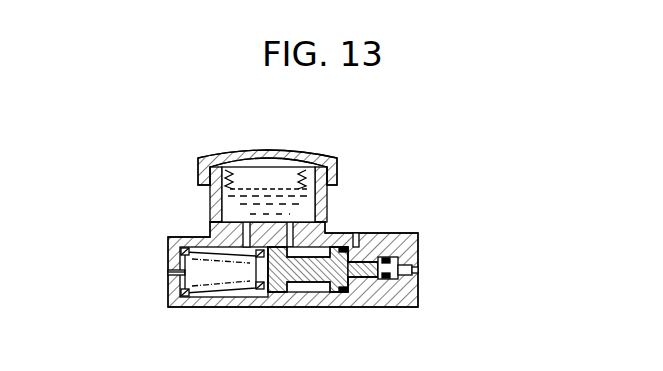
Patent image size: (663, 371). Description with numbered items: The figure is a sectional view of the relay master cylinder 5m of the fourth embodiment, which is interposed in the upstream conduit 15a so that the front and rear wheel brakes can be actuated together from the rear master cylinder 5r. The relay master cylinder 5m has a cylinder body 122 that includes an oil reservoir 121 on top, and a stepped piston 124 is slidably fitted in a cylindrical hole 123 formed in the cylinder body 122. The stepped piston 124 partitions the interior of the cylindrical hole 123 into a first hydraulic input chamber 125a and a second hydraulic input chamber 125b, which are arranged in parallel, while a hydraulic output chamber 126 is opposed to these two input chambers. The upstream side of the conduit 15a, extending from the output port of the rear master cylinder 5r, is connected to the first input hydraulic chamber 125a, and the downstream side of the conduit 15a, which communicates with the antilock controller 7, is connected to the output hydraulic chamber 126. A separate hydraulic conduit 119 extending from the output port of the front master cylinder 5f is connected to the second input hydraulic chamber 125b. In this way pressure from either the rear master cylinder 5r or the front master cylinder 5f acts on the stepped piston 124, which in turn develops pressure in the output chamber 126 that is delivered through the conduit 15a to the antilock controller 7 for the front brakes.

The relay master cylinder 5m is at (204, 151).
The oil reservoir 121 is at (214, 209).
The cylinder body 122 is at (177, 249).
The cylindrical hole 123 is at (241, 291).
The stepped piston 124 is at (313, 279).
The first hydraulic input chamber 125a is at (405, 274).
The second hydraulic input chamber 125b is at (357, 293).
The hydraulic output chamber 126 is at (187, 294).
The hydraulic conduit 119 is at (357, 205).
The front master cylinder 5f is at (356, 233).
The rear master cylinder 5r is at (418, 268).
The antilock controller 7 is at (168, 273).
The upstream conduit 15a is at (121, 276).